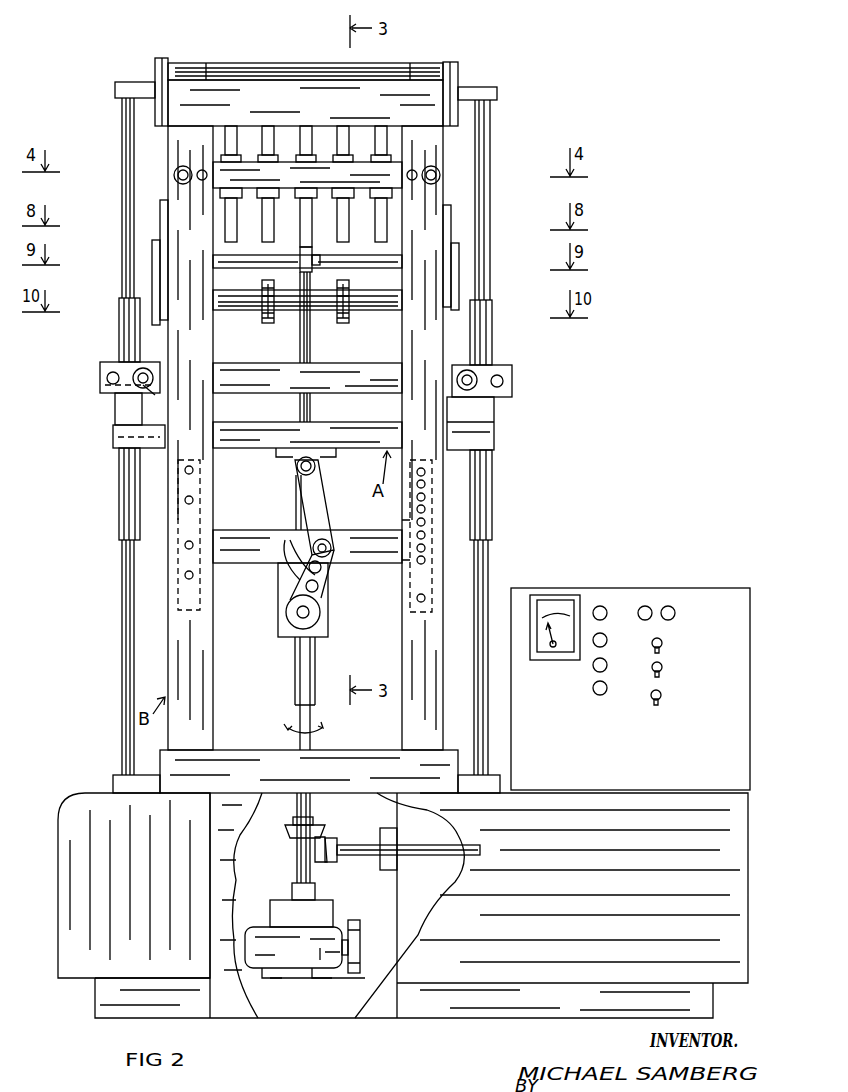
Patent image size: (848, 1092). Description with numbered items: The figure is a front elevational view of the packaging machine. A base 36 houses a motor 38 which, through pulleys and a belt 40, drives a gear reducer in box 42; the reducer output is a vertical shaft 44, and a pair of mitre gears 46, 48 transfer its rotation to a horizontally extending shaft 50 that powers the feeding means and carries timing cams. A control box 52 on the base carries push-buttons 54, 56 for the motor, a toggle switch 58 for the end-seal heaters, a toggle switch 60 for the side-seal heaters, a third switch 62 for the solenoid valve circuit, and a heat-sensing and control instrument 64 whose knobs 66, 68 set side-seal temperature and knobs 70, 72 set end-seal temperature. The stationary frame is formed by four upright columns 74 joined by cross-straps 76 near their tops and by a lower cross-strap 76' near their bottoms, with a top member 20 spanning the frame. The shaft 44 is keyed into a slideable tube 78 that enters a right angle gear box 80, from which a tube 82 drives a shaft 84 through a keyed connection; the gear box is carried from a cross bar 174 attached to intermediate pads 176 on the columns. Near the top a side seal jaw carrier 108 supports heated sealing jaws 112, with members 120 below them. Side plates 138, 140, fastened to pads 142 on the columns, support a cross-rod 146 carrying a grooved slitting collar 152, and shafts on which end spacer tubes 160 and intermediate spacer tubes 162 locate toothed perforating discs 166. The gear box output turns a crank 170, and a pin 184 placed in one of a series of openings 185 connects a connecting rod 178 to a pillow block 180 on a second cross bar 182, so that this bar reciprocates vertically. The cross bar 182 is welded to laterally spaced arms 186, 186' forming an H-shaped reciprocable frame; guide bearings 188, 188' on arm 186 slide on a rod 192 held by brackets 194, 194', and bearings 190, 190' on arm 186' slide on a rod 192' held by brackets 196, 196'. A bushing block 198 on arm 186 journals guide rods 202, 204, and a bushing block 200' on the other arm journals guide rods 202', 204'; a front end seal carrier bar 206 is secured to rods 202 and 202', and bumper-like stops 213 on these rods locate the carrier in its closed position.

The top bar 20 is at (382, 65).
The cross-strap 76 is at (341, 106).
The base block 76' is at (309, 780).
The bracket 194 is at (117, 177).
The bracket 194' is at (114, 775).
The bracket 196 is at (498, 184).
The bracket 196' is at (497, 794).
The upright column 74 is at (178, 688).
The intermediate pad 176 is at (190, 600).
The sealing jaw 112 is at (381, 135).
The side seal jaw carrier 108 is at (222, 172).
The pin members 120 is at (260, 194).
The grooved collar 152 is at (322, 260).
The cross-rod 146 is at (222, 262).
The end spacer tube 160 is at (218, 298).
The grooved disc 166 is at (265, 322).
The intermediate spacer tube 162 is at (300, 310).
The front end seal carrier bar 206 is at (326, 388).
The shaft 84 is at (300, 407).
The second cross bar 182 is at (252, 445).
The pillow block 180 is at (318, 460).
The connecting rod 178 is at (322, 500).
The tube 82 is at (296, 508).
The cross bar 174 is at (246, 565).
The opening 185 is at (290, 545).
The pin 184 is at (328, 556).
The crank 170 is at (312, 612).
The right angle drive gear box 80 is at (280, 620).
The tube 78 is at (296, 692).
The pad 142 is at (160, 210).
The side plate 138 is at (152, 256).
The side plate 140 is at (459, 256).
The guide bearing 188 is at (114, 315).
The guide bearing 188' is at (109, 494).
The bushing block 198 is at (102, 372).
The guide rod 202 is at (119, 351).
The guide rod 204 is at (100, 358).
The bumper-like stop 213 is at (150, 390).
The arm 186 is at (122, 420).
The arm 186' is at (495, 423).
The rod 192 is at (108, 657).
The rod 192' is at (502, 657).
The guide bearing 190 is at (501, 327).
The guide bearing 190' is at (502, 495).
The bushing block 200' is at (506, 377).
The guide rod 202' is at (496, 355).
The guide rod 204' is at (518, 362).
The base 36 is at (60, 918).
The horizontally extending shaft 50 is at (470, 868).
The shaft 44 is at (296, 850).
The mitre gear 46 is at (316, 825).
The mitre gear 48 is at (333, 860).
The box 42 is at (276, 898).
The motor 38 is at (256, 925).
The belt 40 is at (360, 936).
The control box 52 is at (738, 702).
The combination heat-sensing and control instrument 64 is at (565, 605).
The push-button 54 is at (646, 605).
The push-button 56 is at (672, 605).
The knob 66 is at (605, 618).
The knob 68 is at (605, 645).
The knob 70 is at (605, 670).
The knob 72 is at (605, 693).
The third switch 62 is at (662, 645).
The toggle switch 60 is at (662, 669).
The toggle switch 58 is at (661, 697).